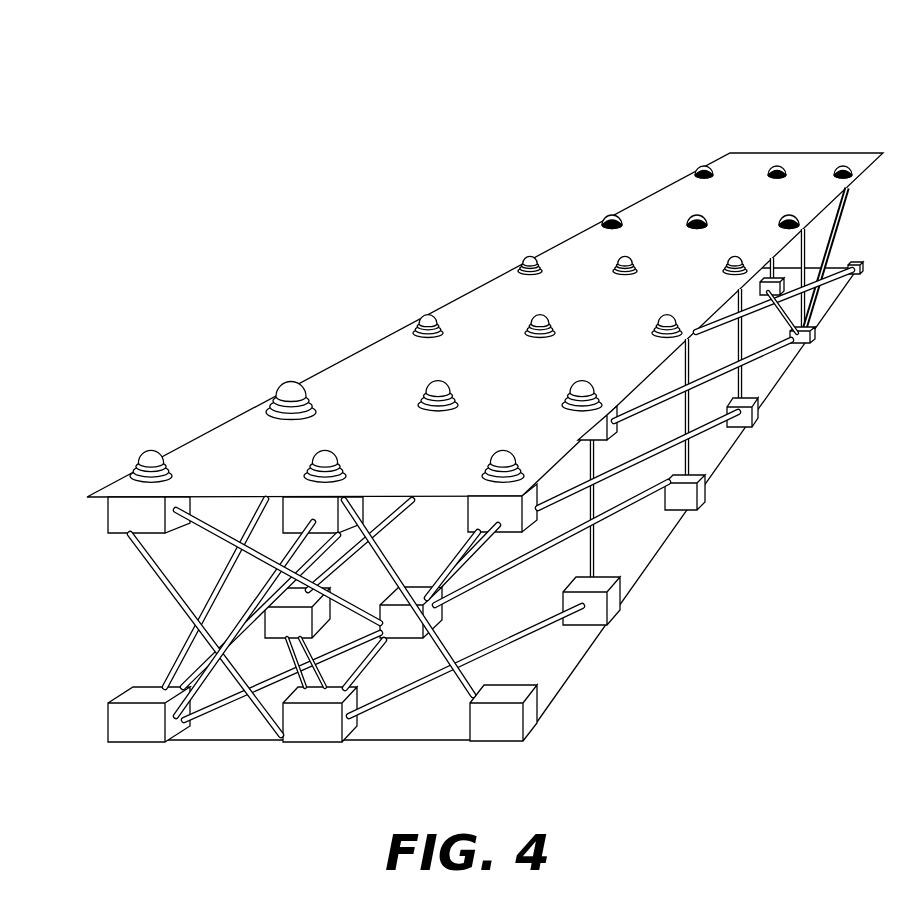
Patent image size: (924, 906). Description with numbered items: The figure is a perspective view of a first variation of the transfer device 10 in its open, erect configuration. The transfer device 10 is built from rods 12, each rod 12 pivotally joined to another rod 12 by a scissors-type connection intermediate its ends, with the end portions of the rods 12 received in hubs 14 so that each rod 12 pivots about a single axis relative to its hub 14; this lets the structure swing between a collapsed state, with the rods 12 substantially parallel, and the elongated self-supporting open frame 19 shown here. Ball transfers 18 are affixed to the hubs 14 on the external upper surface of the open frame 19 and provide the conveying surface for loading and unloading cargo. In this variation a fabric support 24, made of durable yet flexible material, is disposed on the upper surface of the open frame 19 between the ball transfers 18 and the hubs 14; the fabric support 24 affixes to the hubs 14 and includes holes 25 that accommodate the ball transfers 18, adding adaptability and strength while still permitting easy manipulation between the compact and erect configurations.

The transfer device 10 is at (668, 128).
The rod 12 is at (600, 573).
The hub 14 is at (518, 723).
The ball transfer 18 is at (521, 247).
The open frame 19 is at (215, 552).
The fabric support 24 is at (650, 530).
The hole 25 is at (282, 406).